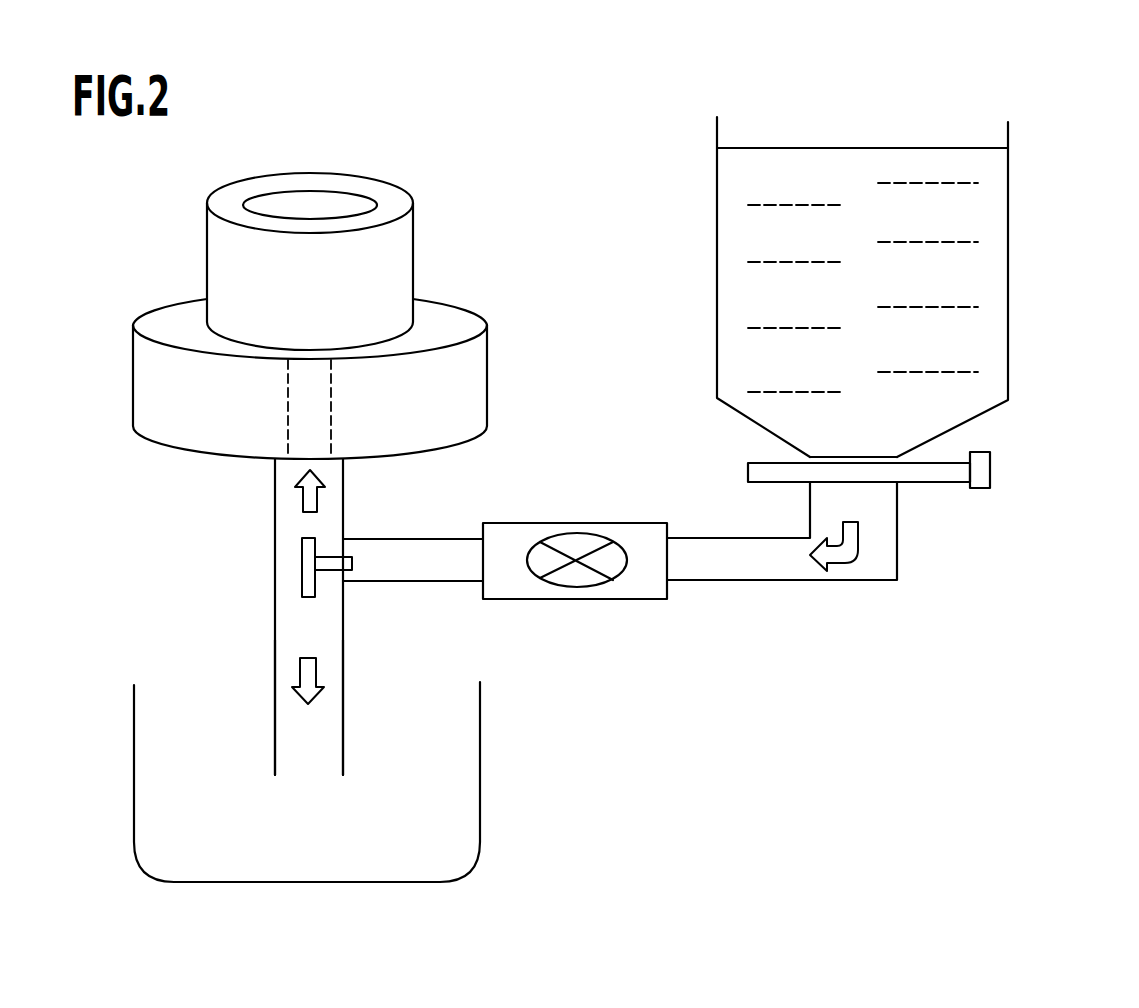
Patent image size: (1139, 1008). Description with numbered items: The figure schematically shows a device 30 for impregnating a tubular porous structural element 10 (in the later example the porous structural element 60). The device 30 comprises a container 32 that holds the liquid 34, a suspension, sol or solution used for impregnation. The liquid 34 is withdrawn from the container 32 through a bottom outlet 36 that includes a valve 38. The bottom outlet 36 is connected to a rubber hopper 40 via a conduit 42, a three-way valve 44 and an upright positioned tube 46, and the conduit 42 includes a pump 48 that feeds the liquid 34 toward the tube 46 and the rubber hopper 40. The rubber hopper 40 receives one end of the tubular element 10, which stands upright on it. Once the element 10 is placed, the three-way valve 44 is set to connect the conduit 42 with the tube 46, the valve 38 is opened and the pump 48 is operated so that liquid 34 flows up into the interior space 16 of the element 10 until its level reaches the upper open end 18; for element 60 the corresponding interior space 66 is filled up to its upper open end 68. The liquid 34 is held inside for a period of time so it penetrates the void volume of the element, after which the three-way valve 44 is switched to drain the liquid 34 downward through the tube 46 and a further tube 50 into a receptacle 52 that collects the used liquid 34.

The porous structural element 10 is at (397, 226).
The porous structural element 60 is at (397, 226).
The interior space 16 is at (319, 160).
The interior space 66 is at (313, 205).
The upper end 18 is at (353, 180).
The upper end 68 is at (397, 187).
The rubber hopper 40 is at (485, 370).
The tube 46 is at (287, 420).
The three-way valve 44 is at (302, 562).
The further tube 50 is at (275, 718).
The receptacle 52 is at (482, 760).
The conduit 42 is at (727, 572).
The pump 48 is at (640, 588).
The device 30 is at (882, 302).
The container 32 is at (1022, 262).
The liquid 34 is at (897, 288).
The bottom outlet 36 is at (748, 443).
The valve 38 is at (937, 473).